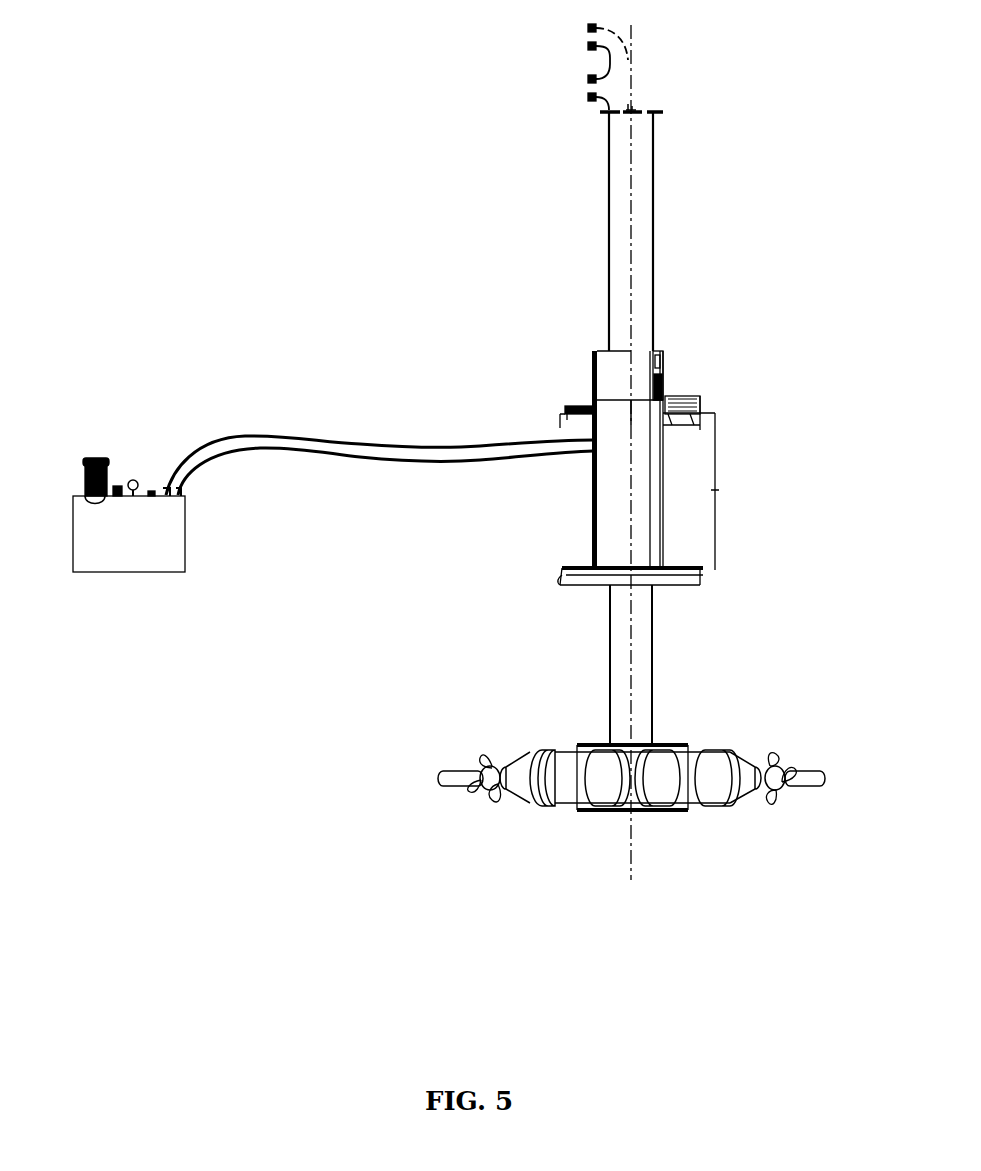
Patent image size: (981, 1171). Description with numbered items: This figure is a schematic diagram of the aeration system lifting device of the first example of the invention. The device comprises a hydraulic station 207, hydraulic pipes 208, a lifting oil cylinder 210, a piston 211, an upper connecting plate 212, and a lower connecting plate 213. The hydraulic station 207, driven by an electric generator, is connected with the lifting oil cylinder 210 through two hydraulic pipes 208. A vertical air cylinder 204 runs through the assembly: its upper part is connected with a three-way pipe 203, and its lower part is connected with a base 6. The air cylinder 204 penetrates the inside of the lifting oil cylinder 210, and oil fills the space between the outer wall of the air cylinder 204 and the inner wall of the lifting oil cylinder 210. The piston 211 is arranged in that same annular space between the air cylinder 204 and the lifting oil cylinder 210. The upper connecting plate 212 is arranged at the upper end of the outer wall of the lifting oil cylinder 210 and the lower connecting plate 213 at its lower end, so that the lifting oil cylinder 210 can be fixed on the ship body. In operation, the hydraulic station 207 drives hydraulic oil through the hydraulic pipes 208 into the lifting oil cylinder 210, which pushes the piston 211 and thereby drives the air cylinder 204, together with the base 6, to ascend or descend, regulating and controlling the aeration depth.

The three-way pipe 203 is at (628, 52).
The air cylinder 204 is at (653, 655).
The lifting oil cylinder 210 is at (663, 468).
The piston 211 is at (663, 377).
The upper connecting plate 212 is at (865, 473).
The lower connecting plate 213 is at (865, 647).
The base 6 is at (640, 762).
The hydraulic station 207 is at (110, 545).
The hydraulic pipes 208 is at (358, 563).